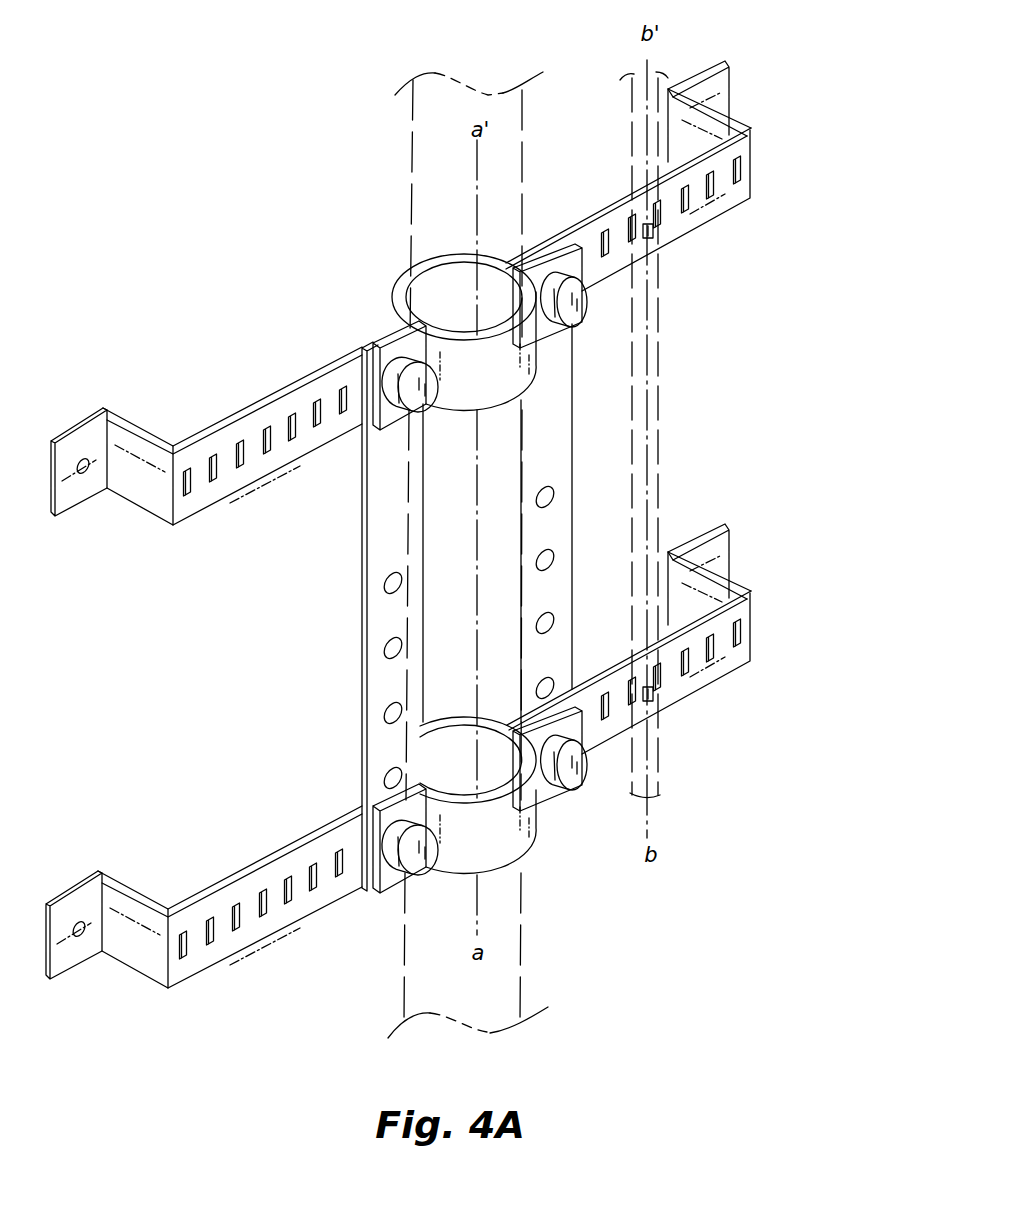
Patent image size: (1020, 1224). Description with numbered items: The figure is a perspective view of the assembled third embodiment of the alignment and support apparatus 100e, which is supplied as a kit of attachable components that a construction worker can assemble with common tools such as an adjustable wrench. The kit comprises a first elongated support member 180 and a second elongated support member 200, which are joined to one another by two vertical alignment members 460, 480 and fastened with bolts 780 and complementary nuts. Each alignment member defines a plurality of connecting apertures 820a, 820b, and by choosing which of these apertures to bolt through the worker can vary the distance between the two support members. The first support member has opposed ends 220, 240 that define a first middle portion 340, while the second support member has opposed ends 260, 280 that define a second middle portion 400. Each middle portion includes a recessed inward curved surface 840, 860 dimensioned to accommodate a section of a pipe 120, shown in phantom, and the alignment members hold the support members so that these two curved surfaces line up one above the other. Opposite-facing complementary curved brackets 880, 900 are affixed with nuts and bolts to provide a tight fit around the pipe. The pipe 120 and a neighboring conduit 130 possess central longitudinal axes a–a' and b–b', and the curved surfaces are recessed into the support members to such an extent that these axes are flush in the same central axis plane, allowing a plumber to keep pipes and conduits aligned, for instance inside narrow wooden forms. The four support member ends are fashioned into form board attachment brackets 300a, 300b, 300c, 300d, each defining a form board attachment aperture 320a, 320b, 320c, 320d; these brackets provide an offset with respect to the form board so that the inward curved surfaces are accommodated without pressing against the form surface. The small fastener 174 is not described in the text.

The alignment and support apparatus 100e is at (150, 82).
The pipe 120 is at (413, 135).
The conduit 130 is at (632, 127).
The fastener clip 174 is at (657, 238).
The first elongated support member 180 is at (261, 410).
The second elongated support member 200 is at (265, 896).
The opposed end 220 is at (180, 443).
The opposed end 240 is at (669, 204).
The opposed end 260 is at (175, 986).
The opposed end 280 is at (667, 671).
The form board attachment bracket 300a is at (112, 443).
The form board attachment bracket 300b is at (742, 88).
The form board attachment bracket 300c is at (755, 567).
The form board attachment bracket 300d is at (107, 932).
The form board attachment aperture 320a is at (90, 472).
The form board attachment aperture 320b is at (732, 105).
The form board attachment aperture 320c is at (80, 925).
The form board attachment aperture 320d is at (733, 580).
The first middle portion 340 is at (572, 222).
The second middle portion 400 is at (600, 672).
The alignment member 460 is at (372, 540).
The alignment member 480 is at (572, 403).
The bolt 780 is at (588, 780).
The connecting apertures 820a is at (383, 718).
The connecting apertures 820b is at (573, 600).
The recessed inward curved surface 840 is at (447, 277).
The recessed inward curved surface 860 is at (452, 737).
The curved bracket 880 is at (450, 398).
The curved bracket 900 is at (510, 850).